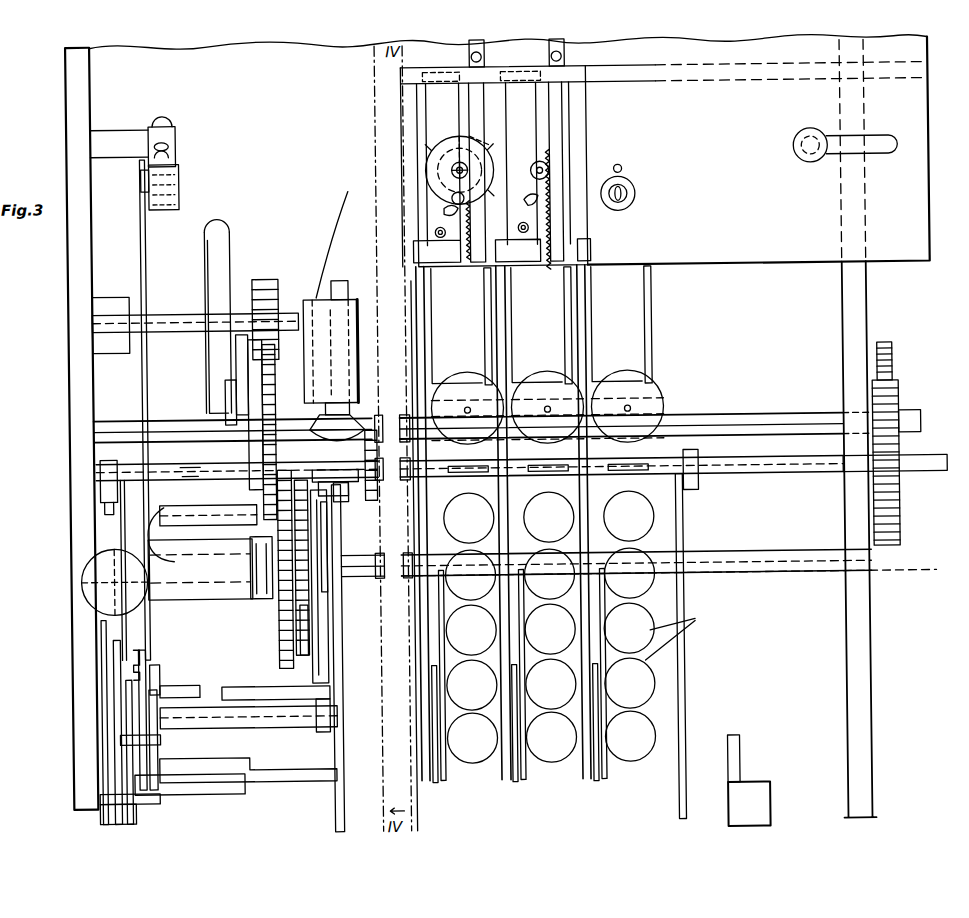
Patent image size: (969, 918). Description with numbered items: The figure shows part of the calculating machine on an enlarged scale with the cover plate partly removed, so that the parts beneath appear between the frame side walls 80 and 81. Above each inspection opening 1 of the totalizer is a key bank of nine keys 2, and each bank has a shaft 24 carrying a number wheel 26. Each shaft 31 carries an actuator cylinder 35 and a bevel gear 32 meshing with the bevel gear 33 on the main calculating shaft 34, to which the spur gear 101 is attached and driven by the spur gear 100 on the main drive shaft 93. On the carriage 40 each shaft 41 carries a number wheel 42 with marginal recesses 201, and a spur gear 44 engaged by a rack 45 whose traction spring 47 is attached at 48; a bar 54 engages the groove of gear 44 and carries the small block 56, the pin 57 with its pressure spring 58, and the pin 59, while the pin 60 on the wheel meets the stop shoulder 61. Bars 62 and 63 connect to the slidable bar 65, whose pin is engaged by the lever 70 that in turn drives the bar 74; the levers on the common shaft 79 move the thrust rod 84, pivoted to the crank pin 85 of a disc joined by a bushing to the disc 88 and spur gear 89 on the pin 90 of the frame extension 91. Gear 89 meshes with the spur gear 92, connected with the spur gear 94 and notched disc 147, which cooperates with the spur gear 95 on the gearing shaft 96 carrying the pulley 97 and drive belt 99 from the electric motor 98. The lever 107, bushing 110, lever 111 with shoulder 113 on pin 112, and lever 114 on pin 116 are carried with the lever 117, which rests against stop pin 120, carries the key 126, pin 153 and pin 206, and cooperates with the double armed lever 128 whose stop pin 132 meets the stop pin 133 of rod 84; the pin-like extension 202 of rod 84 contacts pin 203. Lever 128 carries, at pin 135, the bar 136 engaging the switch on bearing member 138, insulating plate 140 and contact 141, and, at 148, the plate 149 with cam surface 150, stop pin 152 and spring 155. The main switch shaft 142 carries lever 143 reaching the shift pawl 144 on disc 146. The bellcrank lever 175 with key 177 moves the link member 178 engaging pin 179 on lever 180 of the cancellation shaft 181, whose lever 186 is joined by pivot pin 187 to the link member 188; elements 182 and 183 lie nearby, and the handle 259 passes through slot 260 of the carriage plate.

The inspection opening 1 is at (635, 188).
The key 2 is at (676, 632).
The shaft 24 is at (661, 382).
The number wheel 26 is at (657, 408).
The shaft 31 is at (350, 286).
The bevel gear 32 is at (360, 418).
The bevel gear 33 is at (372, 496).
The main calculating shaft 34 is at (928, 460).
The actuator cylinder 35 is at (359, 334).
The carriage 40 is at (914, 267).
The shaft 41 is at (455, 170).
The number wheel 42 is at (439, 158).
The spur gear 44 is at (523, 192).
The rack 45 is at (566, 151).
The traction spring 47 is at (600, 62).
The attachment point 48 is at (569, 59).
The bar 54 is at (540, 99).
The small block 56 is at (593, 250).
The pin 57 is at (438, 232).
The pressure spring 58 is at (454, 245).
The pin 59 is at (447, 210).
The pin 60 is at (461, 136).
The stop shoulder 61 is at (479, 134).
The bar 62 is at (426, 338).
The bar 63 is at (568, 323).
The bar 65 is at (431, 782).
The lever 70 is at (440, 780).
The bar 74 is at (504, 780).
The shaft 79 is at (413, 668).
The frame side wall 80 is at (80, 370).
The frame side wall 81 is at (868, 317).
The thrust rod 84 is at (340, 664).
The crank pin 85 is at (340, 504).
The disc 88 is at (326, 594).
The spur gear 89 is at (277, 638).
The pin 90 is at (283, 602).
The frame extension 91 is at (198, 596).
The spur gear 92 is at (277, 402).
The main drive shaft 93 is at (94, 420).
The spur gear 94 is at (249, 375).
The spur gear 95 is at (270, 277).
The gearing shaft 96 is at (180, 311).
The drive belt pulley 97 is at (232, 243).
The electric motor 98 is at (913, 415).
The drive belt 99 is at (218, 219).
The spur gear 100 is at (893, 361).
The spur gear 101 is at (899, 525).
The lever 107 is at (326, 648).
The bushing 110 is at (286, 725).
The lever 111 is at (99, 766).
The pin 112 is at (228, 717).
The shoulder 113 is at (132, 812).
The lever 114 is at (99, 744).
The pin 116 is at (111, 686).
The lever 117 is at (99, 630).
The stop pin 120 is at (169, 546).
The key 126 is at (80, 578).
The double armed lever 128 is at (123, 686).
The stop pin 132 is at (228, 767).
The stop pin 133 is at (292, 779).
The pin 135 is at (143, 652).
The bar 136 is at (143, 233).
The bearing member 138 is at (182, 196).
The insulating plate 140 is at (179, 136).
The contact 141 is at (172, 150).
The main switch shaft 142 is at (772, 576).
The lever 143 is at (242, 565).
The shift pawl 144 is at (239, 488).
The disc 146 is at (237, 355).
The notched disc 147 is at (226, 392).
The pivot 148 is at (157, 676).
The plate 149 is at (157, 694).
The cam surface 150 is at (507, 72).
The stop pin 152 is at (156, 798).
The pin 153 is at (157, 736).
The traction spring 155 is at (433, 72).
The bellcrank lever 175 is at (736, 771).
The key 177 is at (766, 798).
The link member 178 is at (682, 787).
The pin 179 is at (690, 487).
The lever 180 is at (705, 461).
The cancellation shaft 181 is at (110, 466).
The slot 182 is at (612, 474).
The block 183 is at (340, 518).
The lever 186 is at (100, 474).
The pivot pin 187 is at (104, 500).
The link member 188 is at (120, 496).
The recess 201 is at (443, 195).
The pin-like extension 202 is at (253, 684).
The pin 203 is at (220, 787).
The pin 206 is at (146, 536).
The handle 259 is at (809, 164).
The slot 260 is at (887, 158).